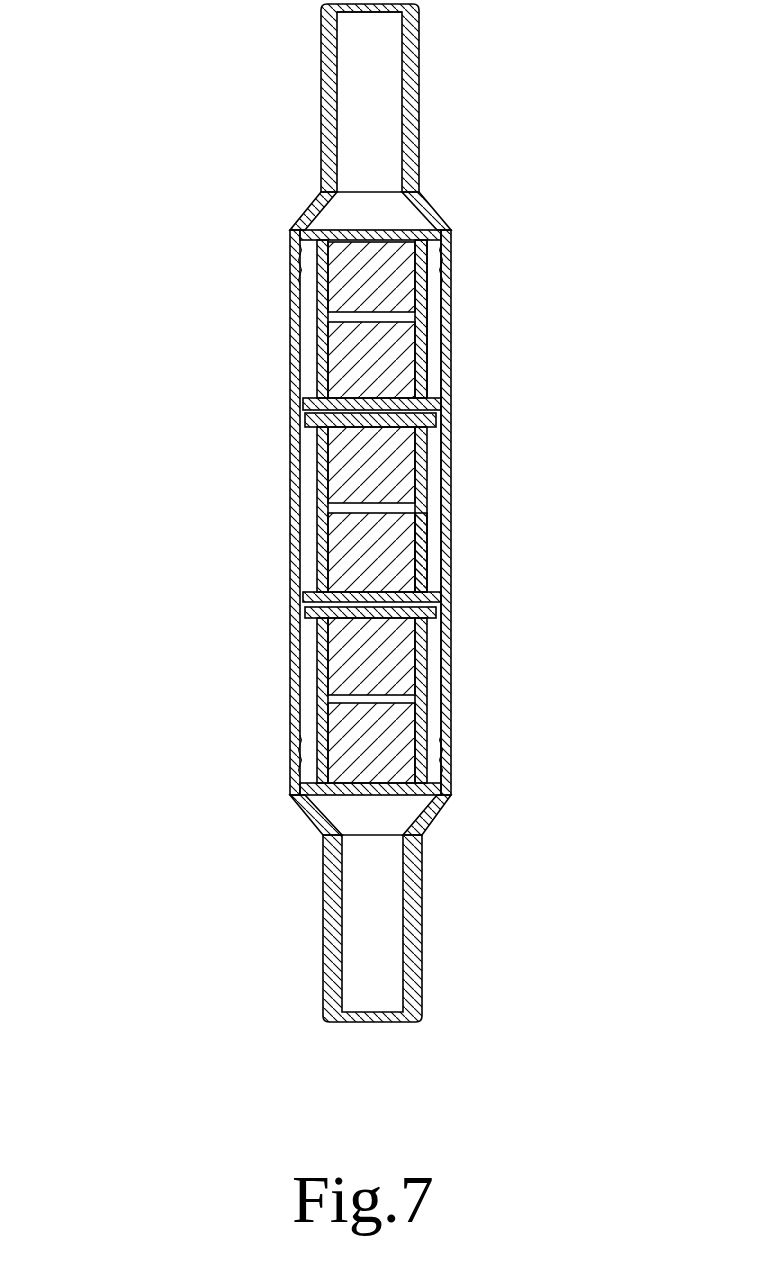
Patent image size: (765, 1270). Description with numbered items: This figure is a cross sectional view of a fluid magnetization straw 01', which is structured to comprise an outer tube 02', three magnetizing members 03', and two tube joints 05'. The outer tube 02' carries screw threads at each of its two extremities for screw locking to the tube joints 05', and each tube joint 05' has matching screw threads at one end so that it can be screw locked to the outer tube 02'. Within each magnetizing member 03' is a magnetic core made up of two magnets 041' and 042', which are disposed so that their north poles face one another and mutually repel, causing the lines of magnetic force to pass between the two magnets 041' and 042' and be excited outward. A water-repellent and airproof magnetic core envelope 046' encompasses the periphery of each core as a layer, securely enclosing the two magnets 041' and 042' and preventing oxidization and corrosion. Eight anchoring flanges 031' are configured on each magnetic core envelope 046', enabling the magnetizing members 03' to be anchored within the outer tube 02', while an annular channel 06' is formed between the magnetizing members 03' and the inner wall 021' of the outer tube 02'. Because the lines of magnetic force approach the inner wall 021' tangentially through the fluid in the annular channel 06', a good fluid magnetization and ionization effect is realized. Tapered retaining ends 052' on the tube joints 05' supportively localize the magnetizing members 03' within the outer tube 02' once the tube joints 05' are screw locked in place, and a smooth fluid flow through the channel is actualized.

The fluid magnetization straw 01' is at (514, 145).
The outer tube 02' is at (444, 512).
The inner wall 021' is at (531, 511).
The magnetizing member 03' is at (444, 511).
The anchoring flange 031' is at (449, 495).
The magnet 041' is at (236, 465).
The magnet 042' is at (234, 552).
The magnetic core envelope 046' is at (518, 548).
The tube joint 05' is at (292, 513).
The tapered retaining end 052' is at (293, 499).
The annular channel 06' is at (513, 319).